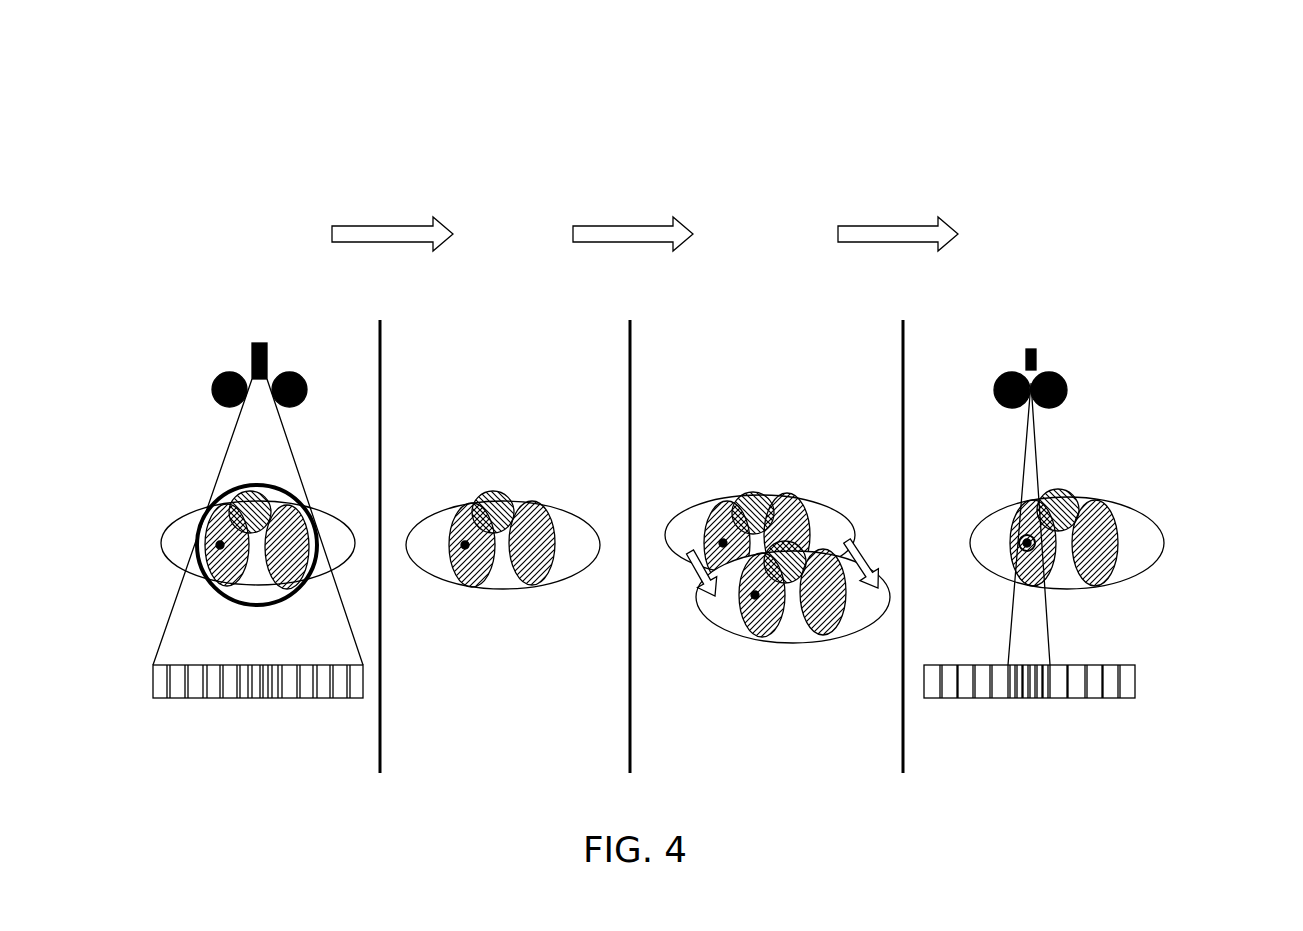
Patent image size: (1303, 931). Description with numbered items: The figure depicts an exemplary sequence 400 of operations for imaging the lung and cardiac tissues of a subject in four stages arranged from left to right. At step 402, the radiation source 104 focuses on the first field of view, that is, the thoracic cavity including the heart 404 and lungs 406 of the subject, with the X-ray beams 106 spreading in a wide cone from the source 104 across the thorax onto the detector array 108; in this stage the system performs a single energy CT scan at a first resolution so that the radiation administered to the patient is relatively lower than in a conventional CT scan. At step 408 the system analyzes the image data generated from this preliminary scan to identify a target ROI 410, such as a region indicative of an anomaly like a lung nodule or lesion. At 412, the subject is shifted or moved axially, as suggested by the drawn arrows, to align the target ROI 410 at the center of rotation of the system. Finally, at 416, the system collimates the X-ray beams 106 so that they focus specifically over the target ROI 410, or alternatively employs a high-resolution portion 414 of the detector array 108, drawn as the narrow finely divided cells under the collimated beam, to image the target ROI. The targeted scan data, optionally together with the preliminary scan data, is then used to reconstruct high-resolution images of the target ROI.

The sequence of operations 400 is at (1174, 95).
The step 402 is at (244, 305).
The heart 404 is at (252, 485).
The lungs 406 is at (316, 530).
The step 408 is at (544, 305).
The target ROI 410 is at (448, 537).
The step 412 is at (782, 305).
The high-resolution portion 414 is at (1008, 702).
The step 416 is at (1039, 305).
The radiation source 104 is at (252, 359).
The X-ray beams 106 is at (229, 441).
The detector array 108 is at (141, 682).